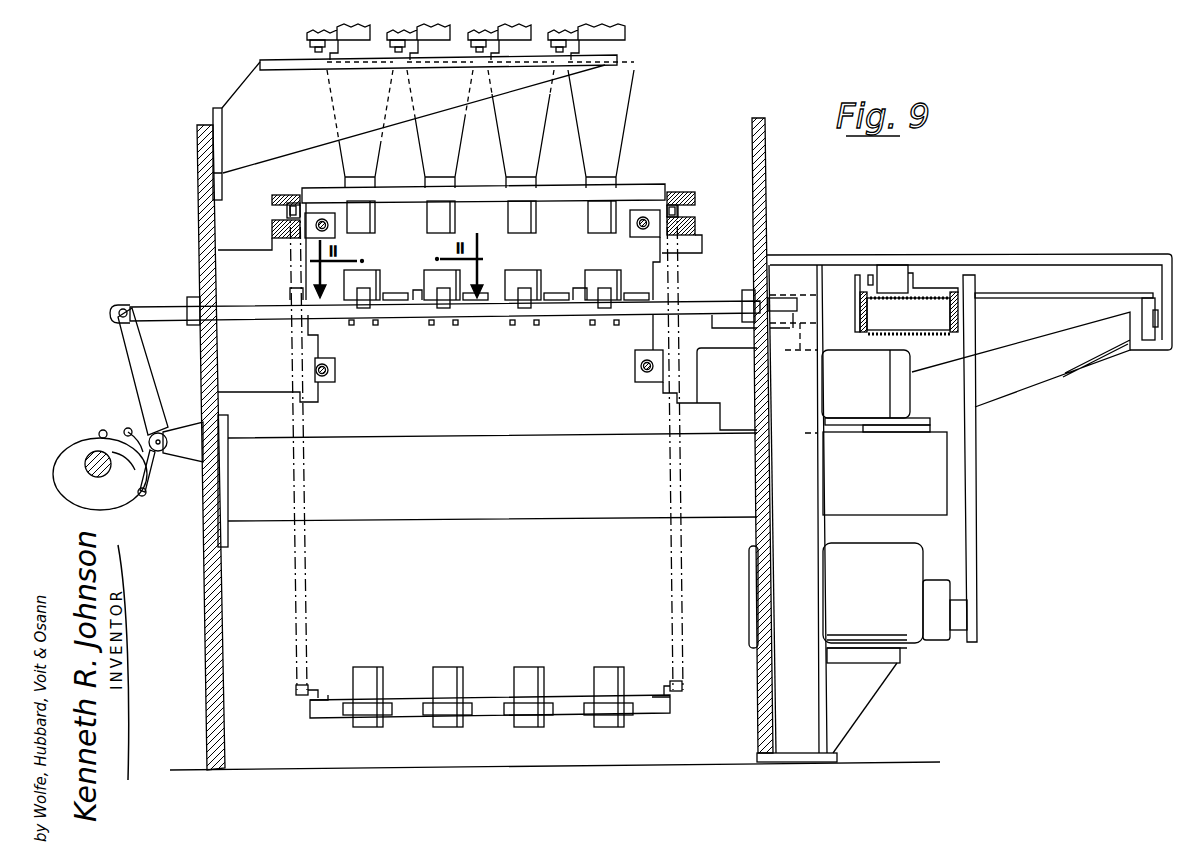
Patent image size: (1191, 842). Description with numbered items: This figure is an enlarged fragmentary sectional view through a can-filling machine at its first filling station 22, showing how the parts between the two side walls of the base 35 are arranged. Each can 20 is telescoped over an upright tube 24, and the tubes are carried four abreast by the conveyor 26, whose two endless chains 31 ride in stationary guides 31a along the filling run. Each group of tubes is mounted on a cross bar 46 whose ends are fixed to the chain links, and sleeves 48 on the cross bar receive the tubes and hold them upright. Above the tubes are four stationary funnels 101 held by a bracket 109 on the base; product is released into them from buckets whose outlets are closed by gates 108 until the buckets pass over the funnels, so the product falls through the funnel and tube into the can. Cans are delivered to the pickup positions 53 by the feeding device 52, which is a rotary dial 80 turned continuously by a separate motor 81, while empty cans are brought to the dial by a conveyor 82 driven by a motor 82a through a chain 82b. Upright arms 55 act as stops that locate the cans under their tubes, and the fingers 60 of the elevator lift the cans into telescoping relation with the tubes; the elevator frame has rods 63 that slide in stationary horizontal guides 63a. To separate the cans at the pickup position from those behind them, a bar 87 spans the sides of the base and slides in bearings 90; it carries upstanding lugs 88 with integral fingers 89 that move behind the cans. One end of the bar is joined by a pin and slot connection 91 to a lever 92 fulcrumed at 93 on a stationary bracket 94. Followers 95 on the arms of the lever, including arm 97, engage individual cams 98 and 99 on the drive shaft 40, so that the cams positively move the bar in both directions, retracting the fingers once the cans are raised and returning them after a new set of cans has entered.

The can 20 is at (610, 277).
The filling station 22 is at (684, 97).
The tube 24 is at (430, 217).
The conveyor 26 is at (665, 178).
The endless chain 31 is at (295, 195).
The stationary guide 31a is at (272, 228).
The base 35 is at (198, 208).
The drive shaft 40 is at (92, 455).
The cross bar 46 is at (640, 183).
The sleeve 48 is at (352, 713).
The feeding device 52 is at (1003, 303).
The pickup position 53 is at (650, 276).
The upright arm 55 is at (532, 298).
The finger 60 is at (352, 325).
The rod 63 is at (335, 372).
The horizontal guide 63a is at (335, 382).
The dial 80 is at (1077, 297).
The motor 81 is at (903, 385).
The conveyor 82 is at (910, 338).
The motor 82a is at (907, 640).
The chain 82b is at (978, 540).
The bar 87 is at (283, 315).
The upstanding lug 88 is at (420, 290).
The finger 89 is at (392, 295).
The bearing 90 is at (193, 298).
The pin and slot connection 91 is at (110, 323).
The lever 92 is at (127, 340).
The fulcrum 93 is at (163, 436).
The stationary bracket 94 is at (182, 453).
The follower 95 is at (147, 510).
The arm 97 is at (150, 483).
The cam 98 is at (67, 477).
The cam 99 is at (140, 462).
The funnel 101 is at (430, 138).
The gate 108 is at (370, 40).
The bracket 109 is at (257, 88).